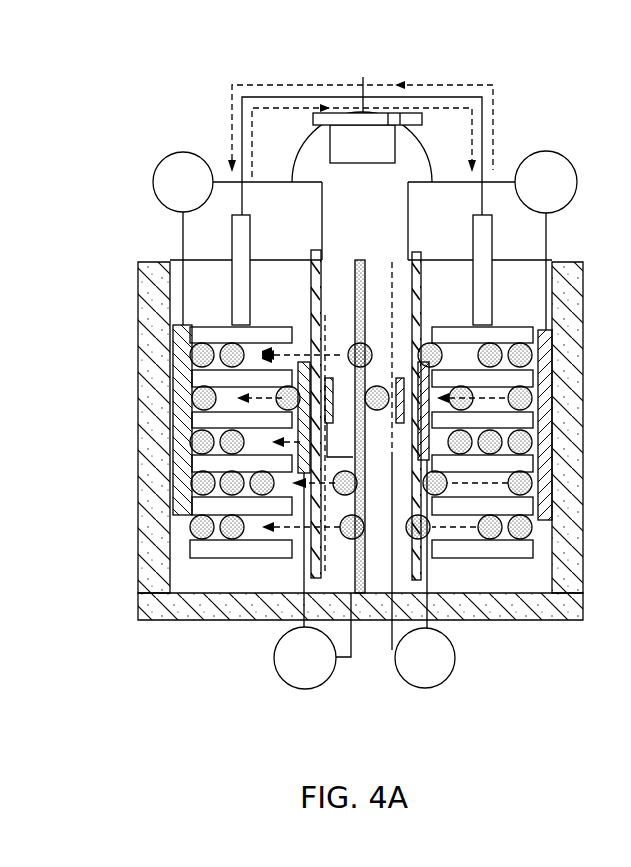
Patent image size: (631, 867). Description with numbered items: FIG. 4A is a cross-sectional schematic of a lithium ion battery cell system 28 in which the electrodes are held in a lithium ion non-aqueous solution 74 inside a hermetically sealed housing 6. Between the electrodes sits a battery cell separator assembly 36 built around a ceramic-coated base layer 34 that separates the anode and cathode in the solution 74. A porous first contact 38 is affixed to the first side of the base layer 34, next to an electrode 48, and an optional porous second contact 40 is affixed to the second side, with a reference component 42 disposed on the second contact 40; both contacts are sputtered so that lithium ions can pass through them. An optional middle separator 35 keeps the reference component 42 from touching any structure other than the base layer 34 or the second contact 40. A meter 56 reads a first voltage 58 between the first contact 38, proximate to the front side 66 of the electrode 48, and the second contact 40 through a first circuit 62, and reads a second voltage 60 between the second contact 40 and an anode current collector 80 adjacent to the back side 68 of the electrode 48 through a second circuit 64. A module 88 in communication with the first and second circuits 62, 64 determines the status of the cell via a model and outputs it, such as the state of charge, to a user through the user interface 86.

The hermetically sealed housing 6 is at (570, 420).
The lithium ion battery cell system 28 is at (132, 272).
The base layer 34 is at (310, 312).
The middle separator 35 is at (392, 648).
The battery cell separator assembly 36 is at (299, 246).
The first contact 38 is at (411, 378).
The second contact 40 is at (326, 318).
The reference component 42 is at (331, 410).
The electrode 48 is at (195, 549).
The meter 56 is at (345, 165).
The first voltage 58 is at (300, 688).
The second voltage 60 is at (153, 181).
The first circuit 62 is at (432, 604).
The second circuit 64 is at (229, 169).
The front side 66 is at (195, 470).
The back side 68 is at (190, 422).
The lithium ion non-aqueous solution 74 is at (245, 583).
The anode current collector 80 is at (181, 383).
The user interface 86 is at (425, 117).
The module 88 is at (397, 119).